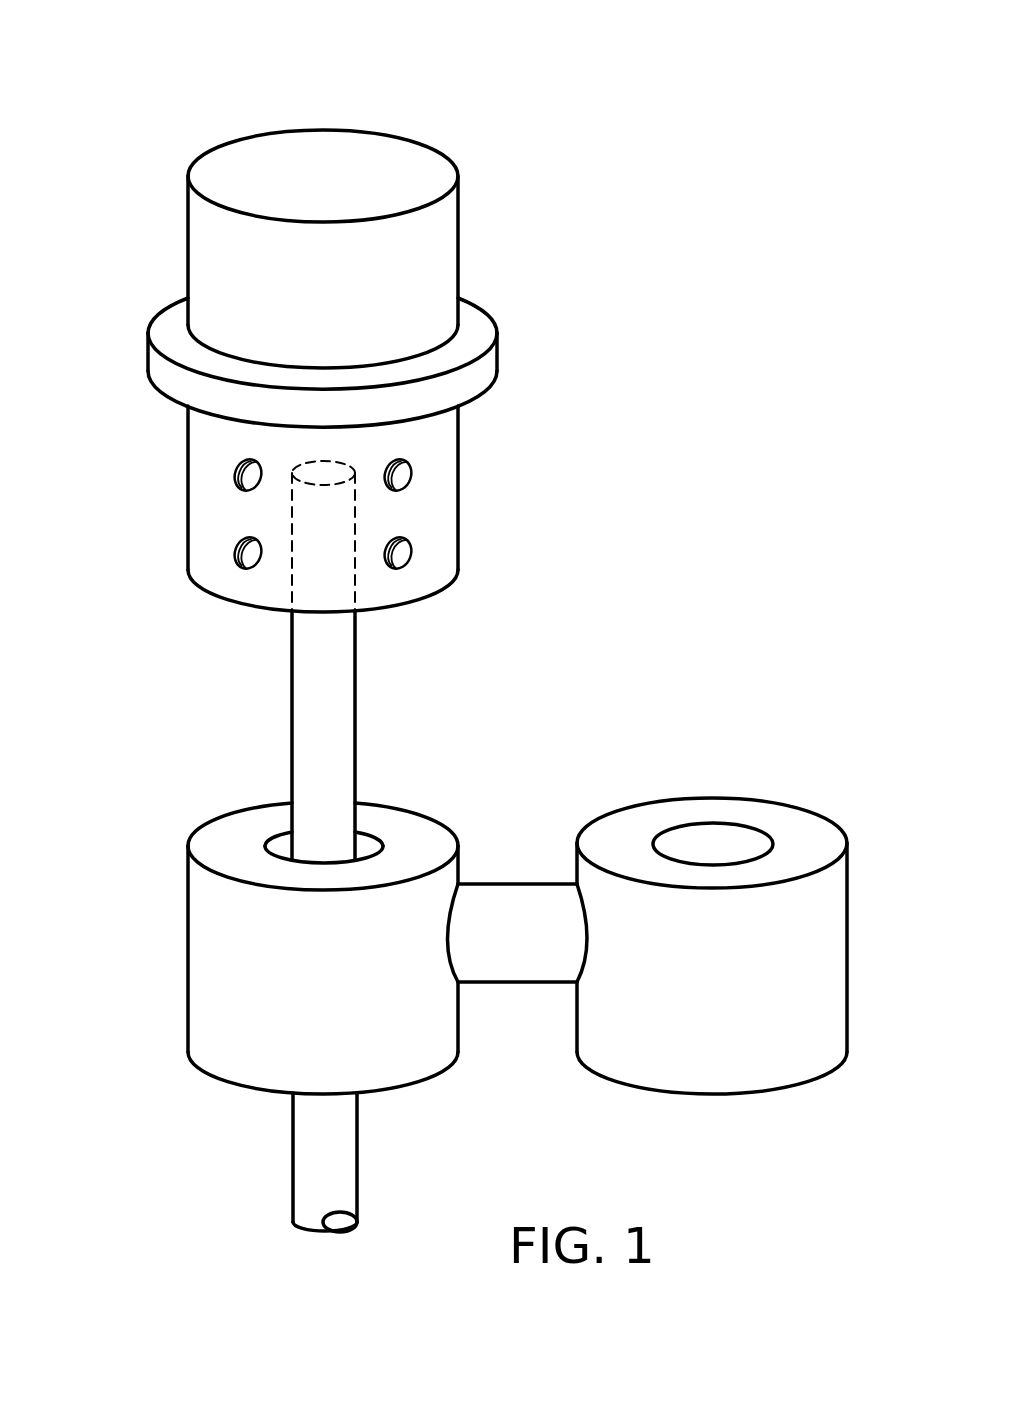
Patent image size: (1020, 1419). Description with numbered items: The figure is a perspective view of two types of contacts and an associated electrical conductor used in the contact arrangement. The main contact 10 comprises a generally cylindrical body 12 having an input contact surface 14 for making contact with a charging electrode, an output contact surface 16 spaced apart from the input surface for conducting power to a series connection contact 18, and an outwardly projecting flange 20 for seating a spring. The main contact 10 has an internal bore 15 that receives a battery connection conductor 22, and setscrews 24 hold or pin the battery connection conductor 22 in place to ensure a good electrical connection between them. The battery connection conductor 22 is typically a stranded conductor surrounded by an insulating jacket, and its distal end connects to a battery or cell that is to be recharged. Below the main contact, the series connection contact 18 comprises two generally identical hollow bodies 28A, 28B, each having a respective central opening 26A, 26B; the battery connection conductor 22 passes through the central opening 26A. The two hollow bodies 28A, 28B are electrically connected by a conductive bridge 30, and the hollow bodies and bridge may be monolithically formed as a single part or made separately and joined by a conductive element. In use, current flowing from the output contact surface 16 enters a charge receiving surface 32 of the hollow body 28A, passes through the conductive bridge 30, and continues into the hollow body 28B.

The main contact 10 is at (565, 108).
The cylindrical body 12 is at (468, 237).
The input contact surface 14 is at (321, 153).
The internal bore 15 is at (343, 572).
The output contact surface 16 is at (405, 645).
The series connection contact 18 is at (174, 760).
The outwardly projecting flange 20 is at (477, 307).
The battery connection conductor 22 is at (350, 707).
The setscrews 24 is at (235, 477).
The central opening 26A is at (288, 847).
The central opening 26B is at (707, 842).
The hollow body 28A is at (264, 870).
The hollow body 28B is at (720, 871).
The conductive bridge 30 is at (541, 950).
The charge receiving surface 32 is at (242, 841).